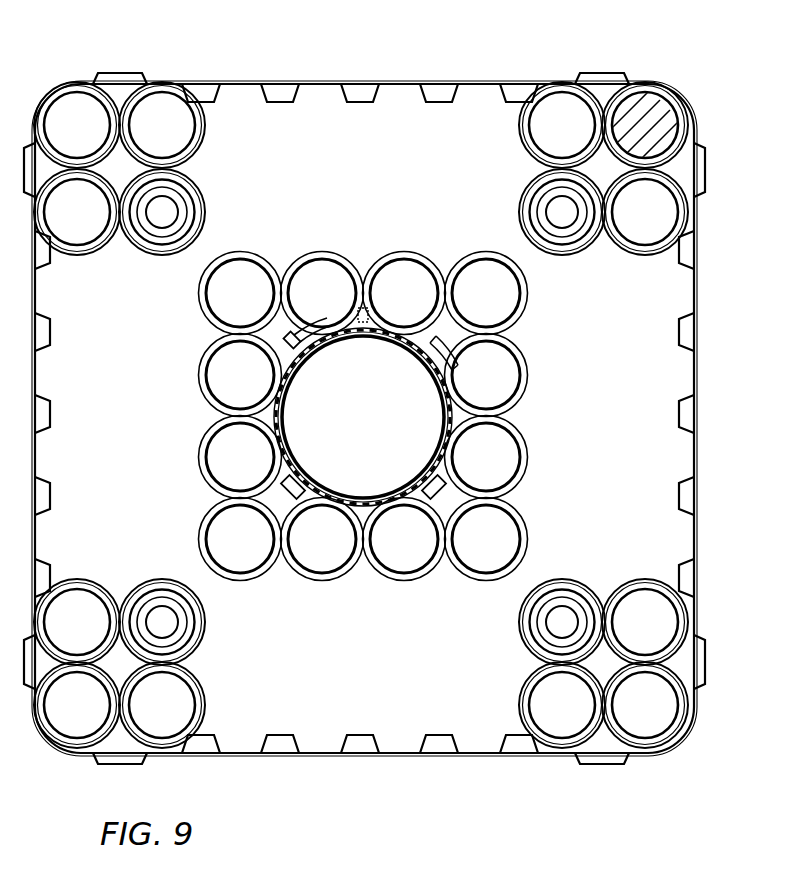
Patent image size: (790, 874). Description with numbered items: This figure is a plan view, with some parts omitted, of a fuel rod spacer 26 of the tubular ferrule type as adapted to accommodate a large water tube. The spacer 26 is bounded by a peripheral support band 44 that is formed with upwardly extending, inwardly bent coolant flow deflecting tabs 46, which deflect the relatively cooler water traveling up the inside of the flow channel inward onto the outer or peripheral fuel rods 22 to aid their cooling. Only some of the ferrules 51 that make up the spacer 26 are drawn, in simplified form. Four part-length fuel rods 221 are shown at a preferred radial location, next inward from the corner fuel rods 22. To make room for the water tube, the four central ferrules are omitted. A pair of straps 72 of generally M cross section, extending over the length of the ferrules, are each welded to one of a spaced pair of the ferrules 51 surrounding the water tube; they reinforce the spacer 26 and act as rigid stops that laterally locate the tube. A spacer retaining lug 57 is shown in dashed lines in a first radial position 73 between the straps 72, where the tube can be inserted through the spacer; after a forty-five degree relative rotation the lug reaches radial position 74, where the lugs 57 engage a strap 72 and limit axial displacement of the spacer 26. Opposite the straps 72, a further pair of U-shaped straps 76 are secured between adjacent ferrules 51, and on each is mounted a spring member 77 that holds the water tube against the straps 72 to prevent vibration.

The fuel rod spacer 26 is at (377, 82).
The peripheral support band 44 is at (170, 82).
The coolant flow deflecting tabs 46 is at (362, 102).
The fuel rods 22 is at (672, 106).
The part-length fuel rods 221 is at (187, 196).
The ferrules 51 is at (203, 402).
The spacer retaining lugs 57 is at (283, 353).
The radial position 74 is at (300, 332).
The first radial position 73 is at (369, 306).
The straps 72 is at (445, 362).
The straps 76 is at (452, 487).
The spring member 77 is at (450, 512).